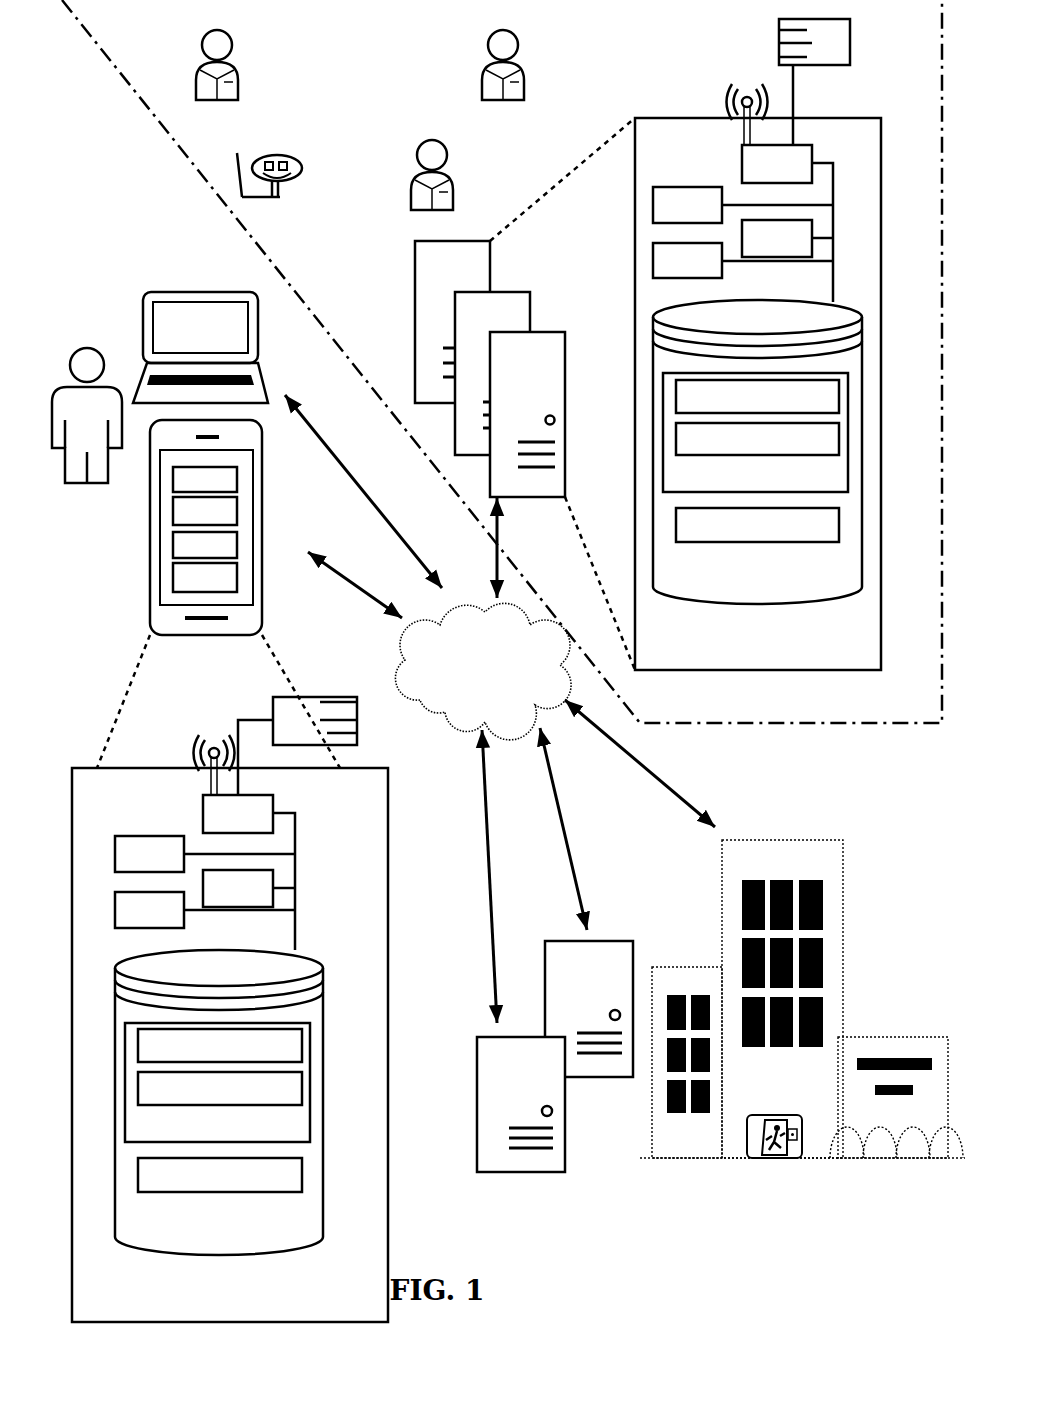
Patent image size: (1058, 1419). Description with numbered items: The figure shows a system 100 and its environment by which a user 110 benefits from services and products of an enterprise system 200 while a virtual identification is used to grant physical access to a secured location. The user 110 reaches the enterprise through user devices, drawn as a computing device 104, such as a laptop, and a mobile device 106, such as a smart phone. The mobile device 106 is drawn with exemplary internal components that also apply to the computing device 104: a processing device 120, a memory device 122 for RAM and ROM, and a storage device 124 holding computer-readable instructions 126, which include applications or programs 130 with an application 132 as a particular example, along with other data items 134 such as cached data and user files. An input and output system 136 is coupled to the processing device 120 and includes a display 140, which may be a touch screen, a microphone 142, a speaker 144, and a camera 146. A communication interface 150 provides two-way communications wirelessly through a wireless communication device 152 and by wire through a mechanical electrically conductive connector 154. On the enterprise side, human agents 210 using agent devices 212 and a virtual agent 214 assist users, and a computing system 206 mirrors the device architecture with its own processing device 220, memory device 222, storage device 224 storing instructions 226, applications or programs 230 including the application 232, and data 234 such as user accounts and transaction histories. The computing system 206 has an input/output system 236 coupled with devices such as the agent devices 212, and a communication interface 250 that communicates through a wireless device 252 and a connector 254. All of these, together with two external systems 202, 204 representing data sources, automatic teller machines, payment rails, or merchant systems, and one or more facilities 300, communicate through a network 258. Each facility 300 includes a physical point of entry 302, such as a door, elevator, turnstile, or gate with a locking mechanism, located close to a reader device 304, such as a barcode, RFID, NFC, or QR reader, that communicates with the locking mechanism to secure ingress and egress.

The system 100 is at (112, 232).
The computing device 104 is at (183, 342).
The mobile device 106 is at (230, 871).
The user 110 is at (68, 417).
The processing device 120 is at (219, 898).
The memory device 122 is at (131, 920).
The storage device 124 is at (219, 1102).
The computer-readable instructions 126 is at (201, 1056).
The applications or programs 130 is at (201, 1135).
The application 132 is at (201, 1099).
The data items 134 is at (201, 1185).
The input and output system 136 is at (131, 864).
The display 140 is at (186, 587).
The microphone 142 is at (186, 555).
The speaker 144 is at (186, 521).
The camera 146 is at (186, 490).
The communication interface 150 is at (219, 824).
The wireless communication device 152 is at (187, 750).
The mechanical electrically conductive connector 154 is at (340, 697).
The enterprise system 200 is at (744, 708).
The external system 202 is at (503, 1095).
The external system 204 is at (569, 1000).
The computing system 206 is at (508, 382).
The human agents 210 is at (240, 72).
The agent devices 212 is at (320, 104).
The virtual agent 214 is at (287, 153).
The processing device 220 is at (758, 248).
The memory device 222 is at (669, 271).
The storage device 224 is at (757, 452).
The computer-readable instructions 226 is at (738, 407).
The applications or programs 230 is at (738, 485).
The application 232 is at (738, 449).
The data 234 is at (738, 535).
The input/output system 236 is at (669, 215).
The communication interface 250 is at (758, 174).
The wireless device 252 is at (727, 101).
The mechanical electrically conductive connector 254 is at (853, 45).
The network 258 is at (464, 670).
The facilities 300 is at (843, 840).
The physical point of entry 302 is at (765, 1130).
The reader device 304 is at (797, 1140).